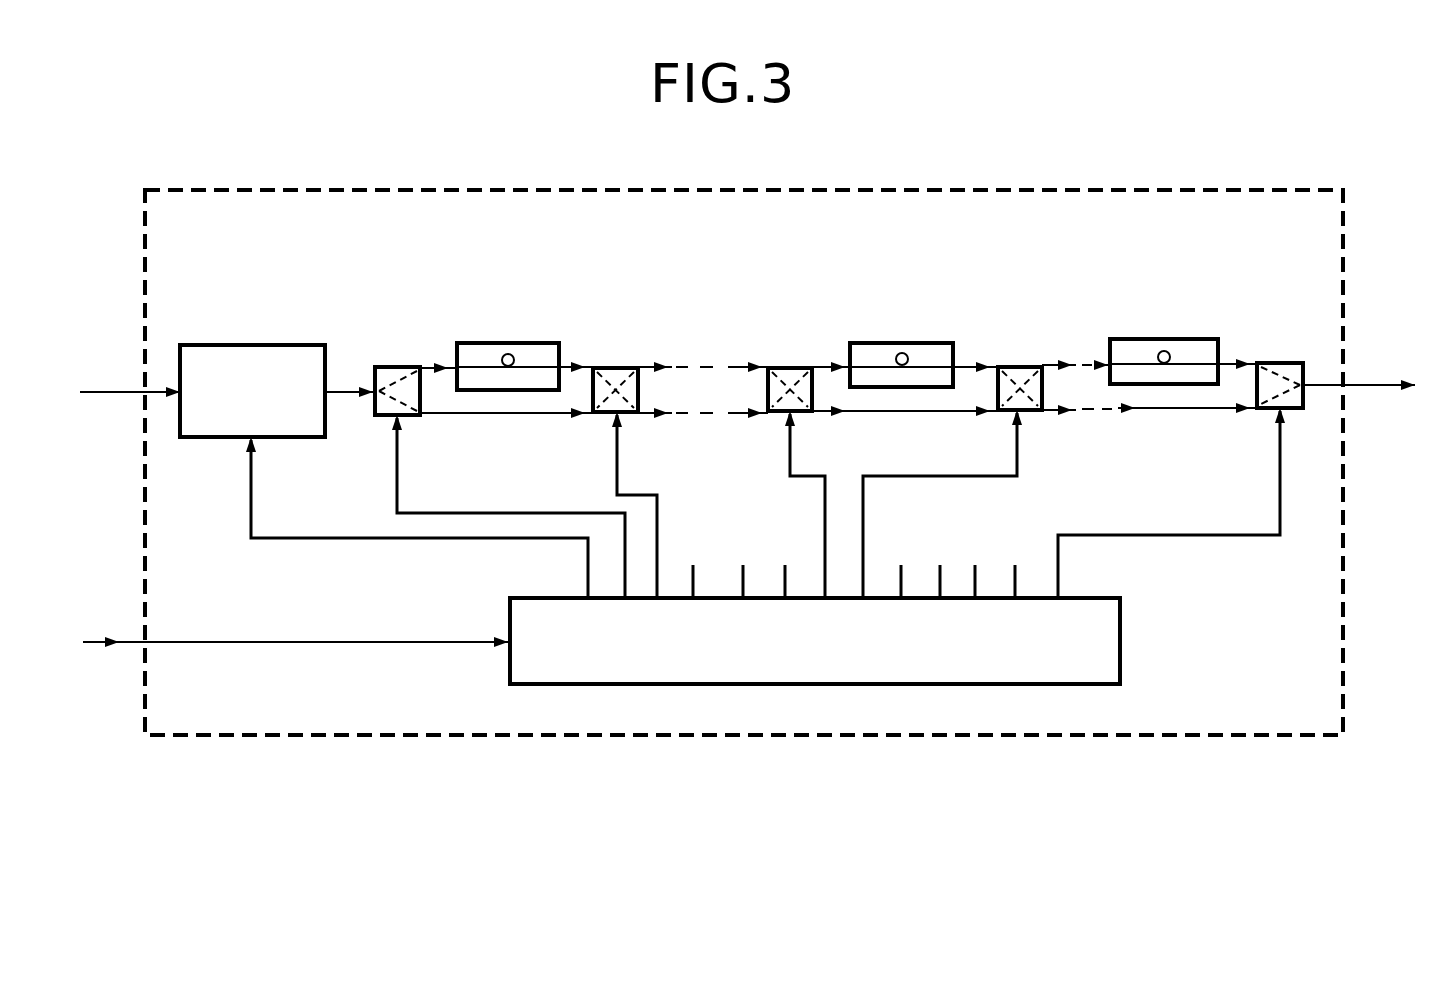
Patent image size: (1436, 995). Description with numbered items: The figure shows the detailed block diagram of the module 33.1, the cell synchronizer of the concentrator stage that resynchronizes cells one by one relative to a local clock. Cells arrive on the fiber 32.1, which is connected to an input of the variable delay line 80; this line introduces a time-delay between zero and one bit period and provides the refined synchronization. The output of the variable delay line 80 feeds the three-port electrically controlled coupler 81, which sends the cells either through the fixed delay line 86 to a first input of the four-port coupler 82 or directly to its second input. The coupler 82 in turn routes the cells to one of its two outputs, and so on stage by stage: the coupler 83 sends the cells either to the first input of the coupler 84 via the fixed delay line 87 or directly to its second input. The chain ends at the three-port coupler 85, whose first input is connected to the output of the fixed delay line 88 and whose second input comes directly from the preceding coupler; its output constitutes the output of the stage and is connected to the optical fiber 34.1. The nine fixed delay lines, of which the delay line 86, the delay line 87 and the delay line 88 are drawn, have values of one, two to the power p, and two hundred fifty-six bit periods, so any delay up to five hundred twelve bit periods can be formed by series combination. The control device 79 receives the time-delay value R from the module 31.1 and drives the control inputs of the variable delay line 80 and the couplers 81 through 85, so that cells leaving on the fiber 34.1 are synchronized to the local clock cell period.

The control device 79 is at (1112, 645).
The variable delay line 80 is at (275, 352).
The three-port electrically controlled coupler 81 is at (395, 367).
The four-port electrically controlled coupler 82 is at (617, 368).
The four-port electrically controlled coupler 83 is at (790, 368).
The four-port electrically controlled coupler 84 is at (1018, 368).
The three-port electrically controlled coupler 85 is at (1282, 363).
The fixed delay line 86 is at (533, 345).
The fixed delay line 87 is at (940, 345).
The fixed delay line 88 is at (1212, 342).
The module 31.1 is at (128, 641).
The fiber 32.1 is at (125, 392).
The module 33.1 is at (1225, 190).
The optical fiber 34.1 is at (1368, 384).